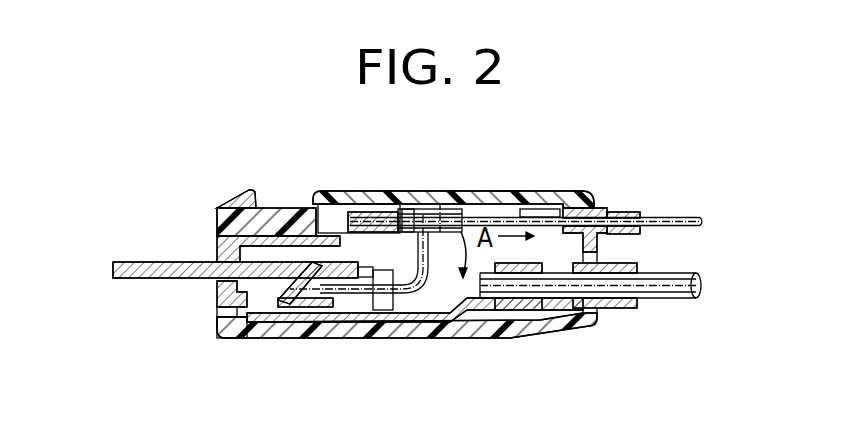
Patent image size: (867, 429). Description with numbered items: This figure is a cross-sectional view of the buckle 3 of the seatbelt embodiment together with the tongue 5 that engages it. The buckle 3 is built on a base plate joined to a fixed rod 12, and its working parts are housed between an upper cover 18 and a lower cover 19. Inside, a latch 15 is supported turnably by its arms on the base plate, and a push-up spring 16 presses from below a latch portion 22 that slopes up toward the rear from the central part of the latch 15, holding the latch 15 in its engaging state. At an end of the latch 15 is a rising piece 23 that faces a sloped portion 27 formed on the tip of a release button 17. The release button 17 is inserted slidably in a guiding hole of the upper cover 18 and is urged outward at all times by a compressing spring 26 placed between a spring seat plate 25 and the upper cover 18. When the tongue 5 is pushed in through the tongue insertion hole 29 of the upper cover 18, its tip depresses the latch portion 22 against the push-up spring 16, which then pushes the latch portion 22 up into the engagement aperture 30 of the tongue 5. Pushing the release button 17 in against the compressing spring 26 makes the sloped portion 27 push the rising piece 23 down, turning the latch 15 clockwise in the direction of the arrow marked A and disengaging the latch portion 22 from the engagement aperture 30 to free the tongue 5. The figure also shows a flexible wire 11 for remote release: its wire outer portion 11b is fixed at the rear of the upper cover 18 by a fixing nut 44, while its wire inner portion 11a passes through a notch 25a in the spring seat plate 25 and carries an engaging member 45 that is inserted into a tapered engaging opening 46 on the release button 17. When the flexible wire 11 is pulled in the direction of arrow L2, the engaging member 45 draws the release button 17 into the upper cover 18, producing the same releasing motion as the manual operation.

The buckle 3 is at (214, 207).
The tongue 5 is at (144, 280).
The flexible wire 11 is at (703, 216).
The wire inner portion 11a is at (662, 212).
The wire outer portion 11b is at (618, 208).
The fixed rod 12 is at (655, 299).
The latch 15 is at (365, 304).
The push-up spring 16 is at (304, 304).
The release button 17 is at (270, 208).
The upper cover 18 is at (507, 191).
The lower cover 19 is at (505, 336).
The latch portion 22 is at (243, 330).
The rising piece 23 is at (436, 316).
The spring seat plate 25 is at (480, 210).
The notch 25a is at (530, 210).
The compressing spring 26 is at (441, 209).
The sloped portion 27 is at (410, 209).
The tongue insertion hole 29 is at (219, 283).
The engagement aperture 30 is at (228, 230).
The fixing nut 44 is at (560, 265).
The engaging member 45 is at (360, 213).
The engaging opening 46 is at (324, 218).
The arrow L2 is at (556, 213).